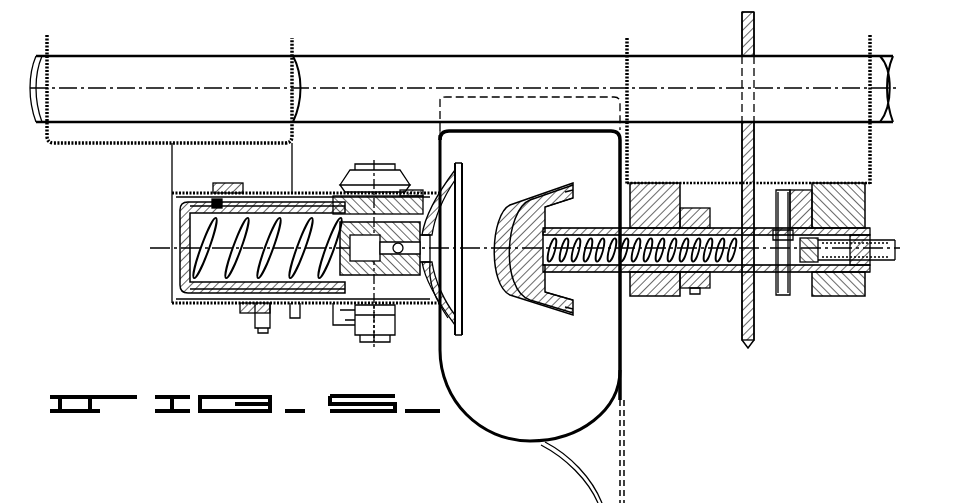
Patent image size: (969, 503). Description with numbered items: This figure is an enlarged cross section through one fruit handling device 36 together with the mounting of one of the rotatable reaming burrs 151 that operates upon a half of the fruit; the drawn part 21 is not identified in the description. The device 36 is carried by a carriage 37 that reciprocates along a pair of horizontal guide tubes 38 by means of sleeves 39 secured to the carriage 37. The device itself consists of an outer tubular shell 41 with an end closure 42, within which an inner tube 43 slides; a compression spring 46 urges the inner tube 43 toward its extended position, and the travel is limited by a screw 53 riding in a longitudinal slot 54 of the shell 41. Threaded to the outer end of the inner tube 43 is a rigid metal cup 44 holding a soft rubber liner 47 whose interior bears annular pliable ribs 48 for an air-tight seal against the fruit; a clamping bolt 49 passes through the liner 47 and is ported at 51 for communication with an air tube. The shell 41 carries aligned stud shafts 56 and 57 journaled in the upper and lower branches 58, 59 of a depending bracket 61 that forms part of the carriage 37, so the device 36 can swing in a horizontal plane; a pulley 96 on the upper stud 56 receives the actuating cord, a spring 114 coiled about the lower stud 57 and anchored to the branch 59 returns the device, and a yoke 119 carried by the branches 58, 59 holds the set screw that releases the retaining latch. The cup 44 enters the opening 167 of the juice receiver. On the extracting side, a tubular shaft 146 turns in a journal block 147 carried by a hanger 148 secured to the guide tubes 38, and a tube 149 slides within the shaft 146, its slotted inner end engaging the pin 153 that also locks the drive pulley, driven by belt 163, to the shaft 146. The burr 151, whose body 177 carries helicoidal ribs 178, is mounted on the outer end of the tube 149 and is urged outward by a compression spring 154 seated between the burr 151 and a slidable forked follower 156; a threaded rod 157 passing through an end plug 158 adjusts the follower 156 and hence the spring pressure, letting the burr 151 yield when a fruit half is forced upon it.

The bracket 21 is at (655, 269).
The fruit handling device 36 is at (210, 300).
The carriage 37 is at (106, 145).
The guide tube 38 is at (462, 60).
The sleeve 39 is at (168, 58).
The outer tubular shell 41 is at (300, 275).
The end closure 42 is at (182, 258).
The inner tube 43 is at (205, 229).
The cup 44 is at (440, 305).
The compression spring 46 is at (335, 262).
The liner 47 is at (452, 287).
The annular pliable ribs 48 is at (462, 208).
The clamping bolt 49 is at (432, 258).
The port 51 is at (418, 248).
The screw 53 is at (222, 203).
The longitudinal slot 54 is at (322, 180).
The upper stud shaft 56 is at (385, 165).
The lower stud shaft 57 is at (378, 342).
The upper branch 58 is at (282, 206).
The lower branch 59 is at (172, 305).
The depending bracket 61 is at (172, 181).
The pulley 96 is at (400, 180).
The spring 114 is at (337, 322).
The yoke 119 is at (228, 183).
The tubular shaft 146 is at (698, 292).
The journal block 147 is at (660, 296).
The hanger 148 is at (698, 183).
The tube 149 is at (600, 273).
The reaming burr 151 is at (546, 302).
The pin 153 is at (810, 186).
The compression spring 154 is at (595, 236).
The forked follower 156 is at (795, 268).
The threaded rod 157 is at (890, 241).
The end plug 158 is at (862, 270).
The belt 163 is at (756, 30).
The opening 167 is at (443, 340).
The burr body 177 is at (523, 210).
The helicoidal ribs 178 is at (553, 194).